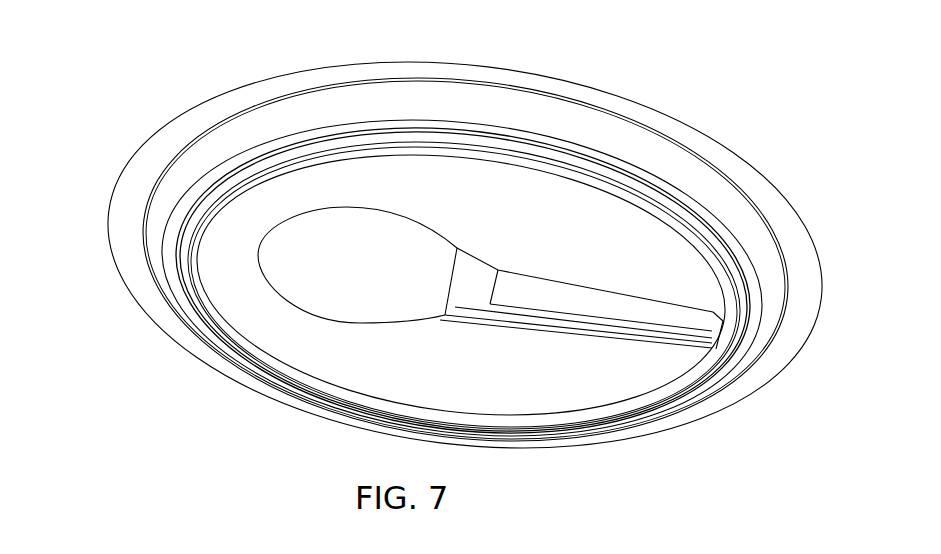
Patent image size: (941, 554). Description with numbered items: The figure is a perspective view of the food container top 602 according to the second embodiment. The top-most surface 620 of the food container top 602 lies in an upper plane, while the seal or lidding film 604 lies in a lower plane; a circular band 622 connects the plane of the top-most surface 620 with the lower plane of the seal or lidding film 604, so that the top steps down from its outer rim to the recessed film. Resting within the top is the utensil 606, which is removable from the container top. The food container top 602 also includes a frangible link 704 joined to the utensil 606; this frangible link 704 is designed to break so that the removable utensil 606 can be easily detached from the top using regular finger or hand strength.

The food container top 602 is at (777, 188).
The seal or lidding film 604 is at (420, 173).
The utensil 606 is at (551, 296).
The top-most surface 620 is at (805, 272).
The circular band 622 is at (649, 157).
The frangible link 704 is at (722, 323).